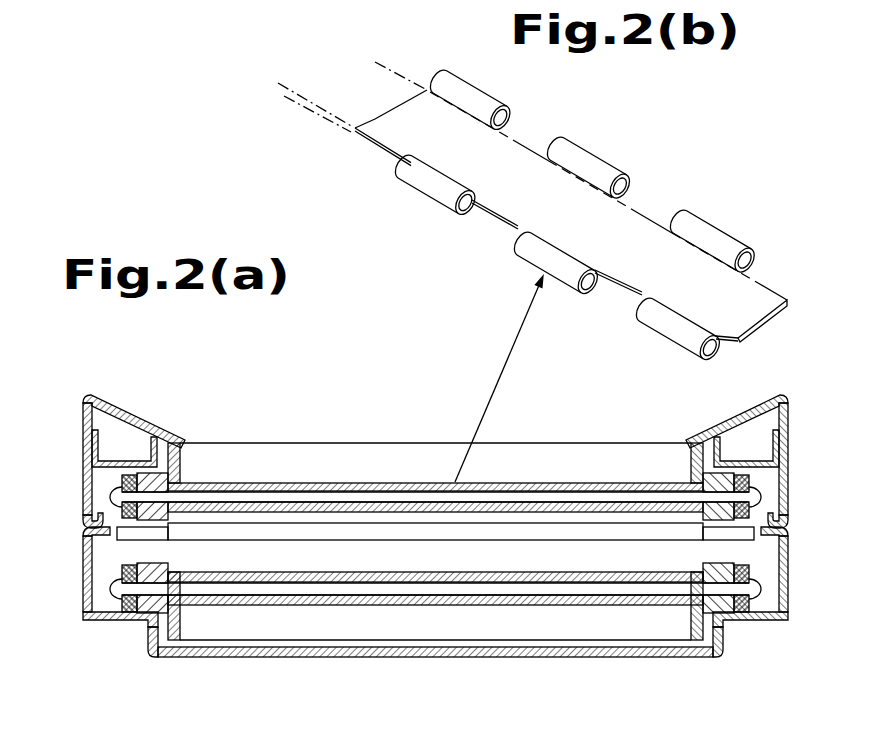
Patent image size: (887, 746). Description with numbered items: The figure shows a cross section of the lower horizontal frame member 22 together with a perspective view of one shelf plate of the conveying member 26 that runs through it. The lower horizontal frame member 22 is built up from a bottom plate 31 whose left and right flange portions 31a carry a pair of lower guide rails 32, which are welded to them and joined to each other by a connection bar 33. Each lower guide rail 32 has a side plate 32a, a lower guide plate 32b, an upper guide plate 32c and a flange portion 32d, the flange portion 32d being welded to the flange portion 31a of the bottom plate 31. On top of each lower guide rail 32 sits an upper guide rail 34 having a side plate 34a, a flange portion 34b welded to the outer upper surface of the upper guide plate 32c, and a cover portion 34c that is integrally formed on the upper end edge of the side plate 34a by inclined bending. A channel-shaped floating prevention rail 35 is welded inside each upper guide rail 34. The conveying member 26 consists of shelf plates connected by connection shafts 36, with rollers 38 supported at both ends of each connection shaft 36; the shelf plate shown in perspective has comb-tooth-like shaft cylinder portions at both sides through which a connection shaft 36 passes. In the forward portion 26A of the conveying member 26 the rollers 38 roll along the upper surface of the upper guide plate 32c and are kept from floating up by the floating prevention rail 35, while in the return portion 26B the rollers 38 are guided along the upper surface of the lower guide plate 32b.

The lower horizontal frame member 22 is at (315, 432).
The conveying member 26 is at (412, 470).
The forward portion of the conveying member 26A is at (518, 448).
The return portion of the conveying member 26B is at (495, 634).
The bottom plate 31 is at (425, 657).
The flange portion of the bottom plate 31a is at (147, 637).
The lower guide rail 32 is at (83, 598).
The side plate of the lower guide rail 32a is at (83, 581).
The lower guide plate 32b is at (110, 622).
The upper guide plate 32c is at (143, 540).
The flange portion of the lower guide rail 32d is at (170, 624).
The connection bar 33 is at (360, 533).
The upper guide rail 34 is at (111, 383).
The side plate of the upper guide rail 34a is at (82, 443).
The flange portion of the upper guide rail 34b is at (102, 513).
The cover portion 34c is at (149, 420).
The floating prevention rail 35 is at (174, 464).
The connection shaft 36 is at (531, 588).
The roller 38 is at (140, 567).